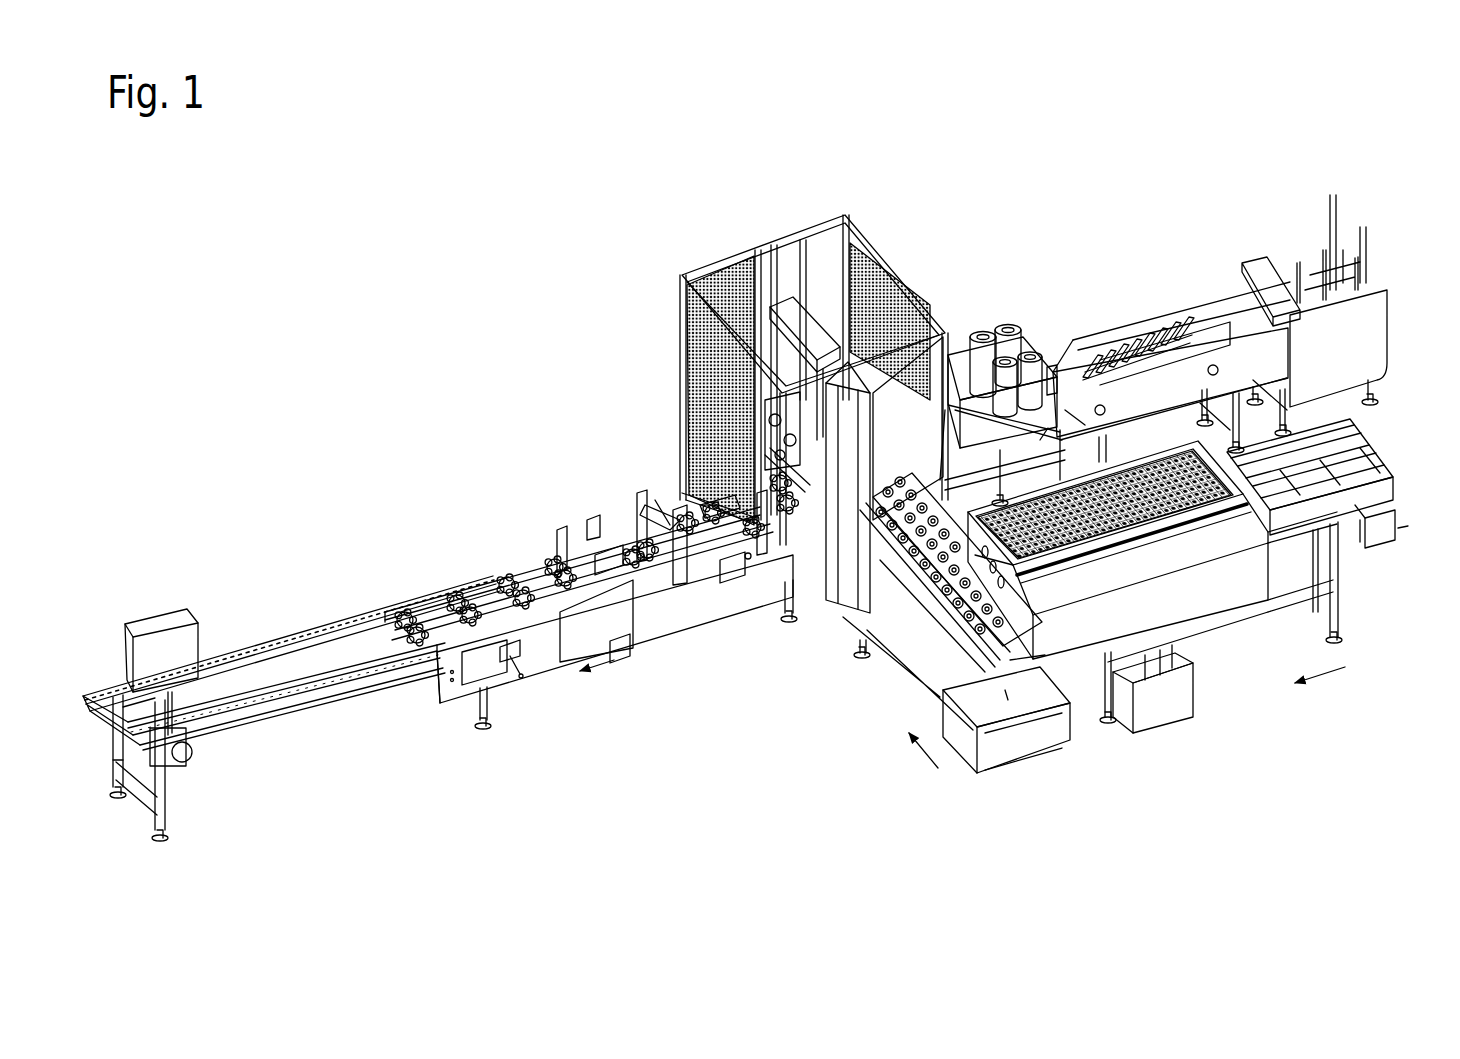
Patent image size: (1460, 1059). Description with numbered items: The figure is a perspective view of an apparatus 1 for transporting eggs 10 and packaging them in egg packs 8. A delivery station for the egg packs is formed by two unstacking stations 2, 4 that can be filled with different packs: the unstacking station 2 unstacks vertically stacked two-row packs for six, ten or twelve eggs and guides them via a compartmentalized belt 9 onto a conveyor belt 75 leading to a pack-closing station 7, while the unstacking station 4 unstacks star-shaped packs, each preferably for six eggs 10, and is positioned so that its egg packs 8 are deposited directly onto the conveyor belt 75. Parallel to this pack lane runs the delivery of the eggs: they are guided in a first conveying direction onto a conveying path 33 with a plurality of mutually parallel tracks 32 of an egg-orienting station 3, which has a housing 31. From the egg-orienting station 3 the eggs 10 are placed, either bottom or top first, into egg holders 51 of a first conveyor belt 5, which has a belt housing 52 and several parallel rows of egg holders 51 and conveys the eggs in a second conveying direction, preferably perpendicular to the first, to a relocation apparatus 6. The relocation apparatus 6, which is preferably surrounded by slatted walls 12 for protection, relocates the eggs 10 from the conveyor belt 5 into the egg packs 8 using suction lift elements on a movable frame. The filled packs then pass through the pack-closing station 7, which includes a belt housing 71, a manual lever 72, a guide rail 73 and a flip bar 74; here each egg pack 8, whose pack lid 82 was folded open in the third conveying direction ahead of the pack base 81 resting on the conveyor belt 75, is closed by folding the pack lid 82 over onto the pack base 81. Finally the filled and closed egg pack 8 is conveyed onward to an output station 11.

The apparatus 1 is at (392, 323).
The unstacking station 2 is at (1265, 205).
The egg-orienting station 3 is at (1178, 602).
The unstacking station 4 is at (985, 312).
The conveyor belt 5 is at (950, 625).
The relocation apparatus 6 is at (792, 288).
The pack-closing station 7 is at (591, 473).
The egg pack 8 is at (1006, 305).
The compartmentalized belt 9 is at (1110, 314).
The egg 10 is at (893, 562).
The output station 11 is at (260, 672).
The slatted walls 12 is at (683, 277).
The housing 31 is at (1062, 640).
The track 32 is at (1353, 473).
The conveying path 33 is at (1340, 517).
The egg holder 51 is at (913, 587).
The belt housing 52 is at (1020, 687).
The belt housing 71 is at (533, 648).
The manual lever 72 is at (515, 665).
The guide rail 73 is at (492, 593).
The flip bar 74 is at (680, 555).
The conveyor belt 75 is at (953, 392).
The pack base 81 is at (720, 503).
The pack lid 82 is at (673, 518).